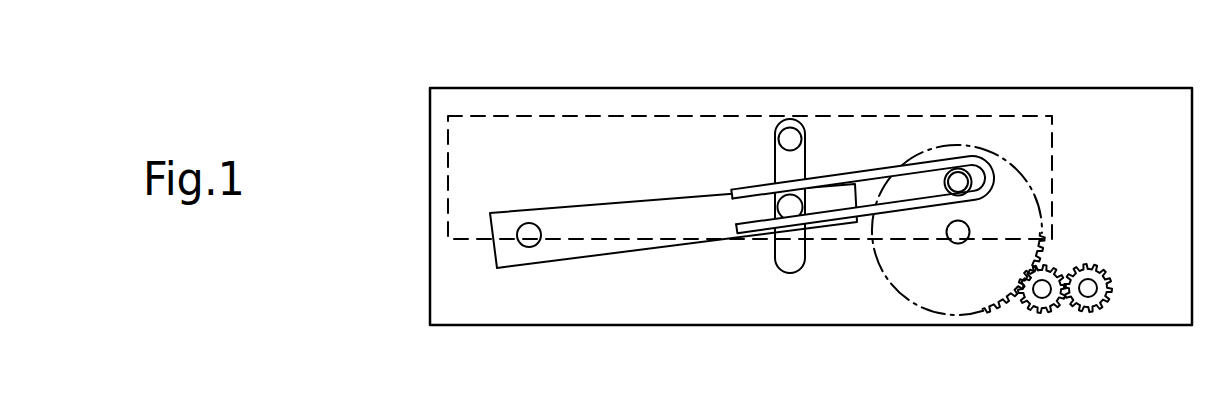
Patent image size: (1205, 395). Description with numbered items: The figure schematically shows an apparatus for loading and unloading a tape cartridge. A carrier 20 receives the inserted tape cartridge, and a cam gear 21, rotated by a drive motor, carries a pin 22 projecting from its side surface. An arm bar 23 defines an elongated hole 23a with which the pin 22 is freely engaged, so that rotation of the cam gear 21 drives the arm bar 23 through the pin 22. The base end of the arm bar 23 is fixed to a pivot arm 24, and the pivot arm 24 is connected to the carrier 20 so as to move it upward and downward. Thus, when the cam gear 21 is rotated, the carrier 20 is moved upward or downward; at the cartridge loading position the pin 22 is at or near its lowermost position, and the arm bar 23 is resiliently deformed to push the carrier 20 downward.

The carrier 20 is at (608, 115).
The cam gear 21 is at (1025, 182).
The pin 22 is at (963, 180).
The arm bar 23 is at (865, 174).
The elongated hole 23a is at (928, 183).
The pivot arm 24 is at (640, 246).